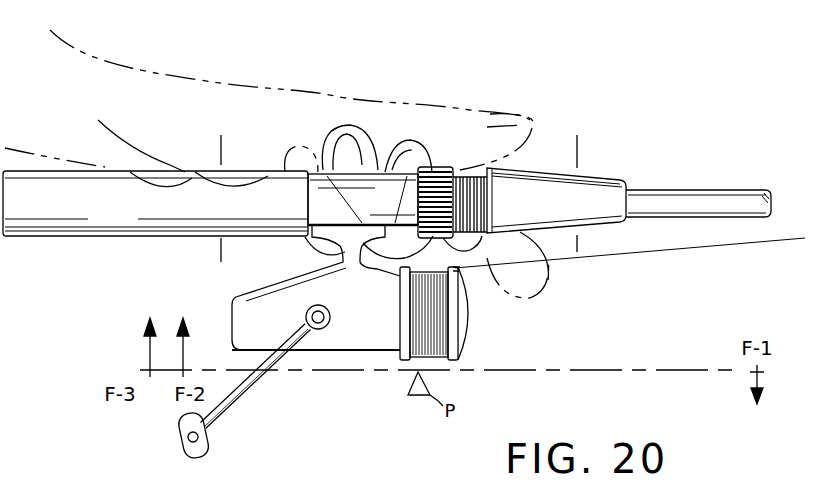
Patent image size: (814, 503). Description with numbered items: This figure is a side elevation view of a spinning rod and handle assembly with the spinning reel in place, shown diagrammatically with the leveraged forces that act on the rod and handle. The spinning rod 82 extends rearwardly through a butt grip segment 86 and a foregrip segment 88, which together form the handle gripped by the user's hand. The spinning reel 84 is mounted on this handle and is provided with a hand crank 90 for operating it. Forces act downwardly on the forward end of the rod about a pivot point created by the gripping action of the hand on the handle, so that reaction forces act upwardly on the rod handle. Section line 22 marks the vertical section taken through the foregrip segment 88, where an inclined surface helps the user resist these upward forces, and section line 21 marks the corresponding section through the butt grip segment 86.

The section line 21- 21 is at (240, 115).
The vertical section view 22 is at (577, 135).
The spinning rod 82 is at (703, 190).
The spinning reel 84 is at (471, 303).
The butt grip segment 86 is at (105, 238).
The foregrip segment 88 is at (605, 176).
The hand crank 90 is at (237, 417).